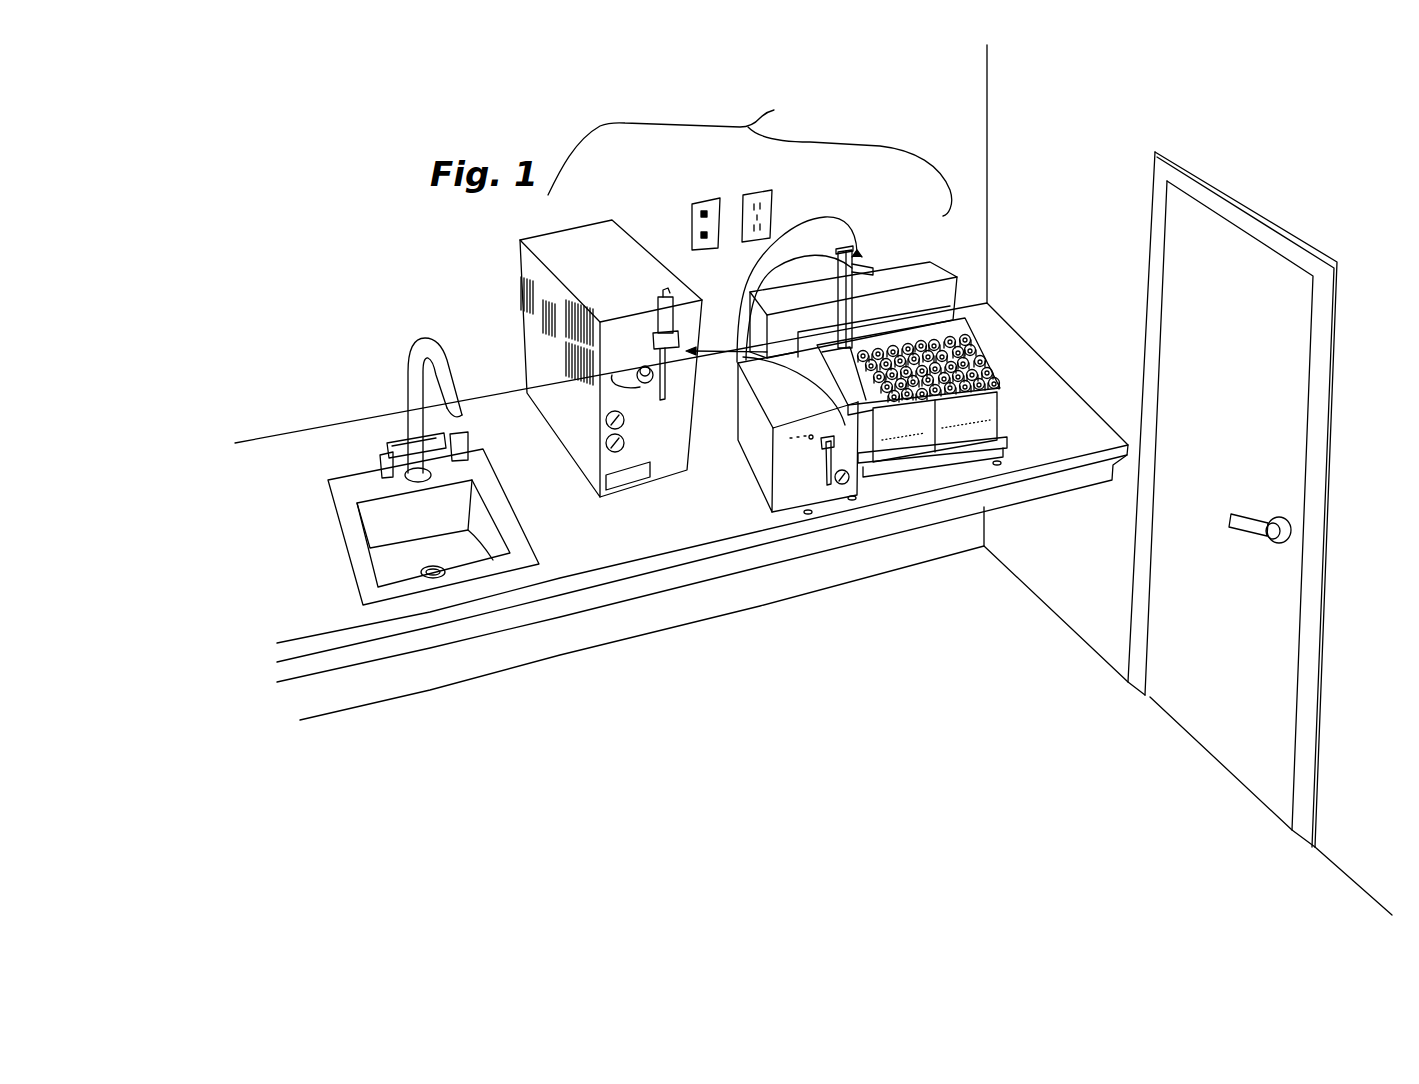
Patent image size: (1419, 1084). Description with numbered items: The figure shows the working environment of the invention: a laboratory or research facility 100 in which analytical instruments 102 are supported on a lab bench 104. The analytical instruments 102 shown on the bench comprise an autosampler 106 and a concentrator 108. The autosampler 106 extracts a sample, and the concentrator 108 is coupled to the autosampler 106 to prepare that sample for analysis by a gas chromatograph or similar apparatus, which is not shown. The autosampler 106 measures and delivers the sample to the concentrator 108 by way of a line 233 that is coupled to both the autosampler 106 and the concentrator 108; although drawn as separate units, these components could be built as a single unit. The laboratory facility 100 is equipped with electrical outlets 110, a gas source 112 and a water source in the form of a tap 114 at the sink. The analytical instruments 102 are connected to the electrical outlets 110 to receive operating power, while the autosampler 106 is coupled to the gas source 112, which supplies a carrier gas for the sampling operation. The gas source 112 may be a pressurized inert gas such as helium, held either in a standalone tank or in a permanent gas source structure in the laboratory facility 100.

The laboratory or research facility 100 is at (1016, 247).
The analytical instruments 102 is at (750, 156).
The lab bench 104 is at (682, 528).
The autosampler 106 is at (910, 277).
The concentrator 108 is at (533, 322).
The electrical outlets 110 is at (757, 193).
The gas source 112 is at (697, 203).
The tap 114 is at (421, 338).
The line 233 is at (715, 352).